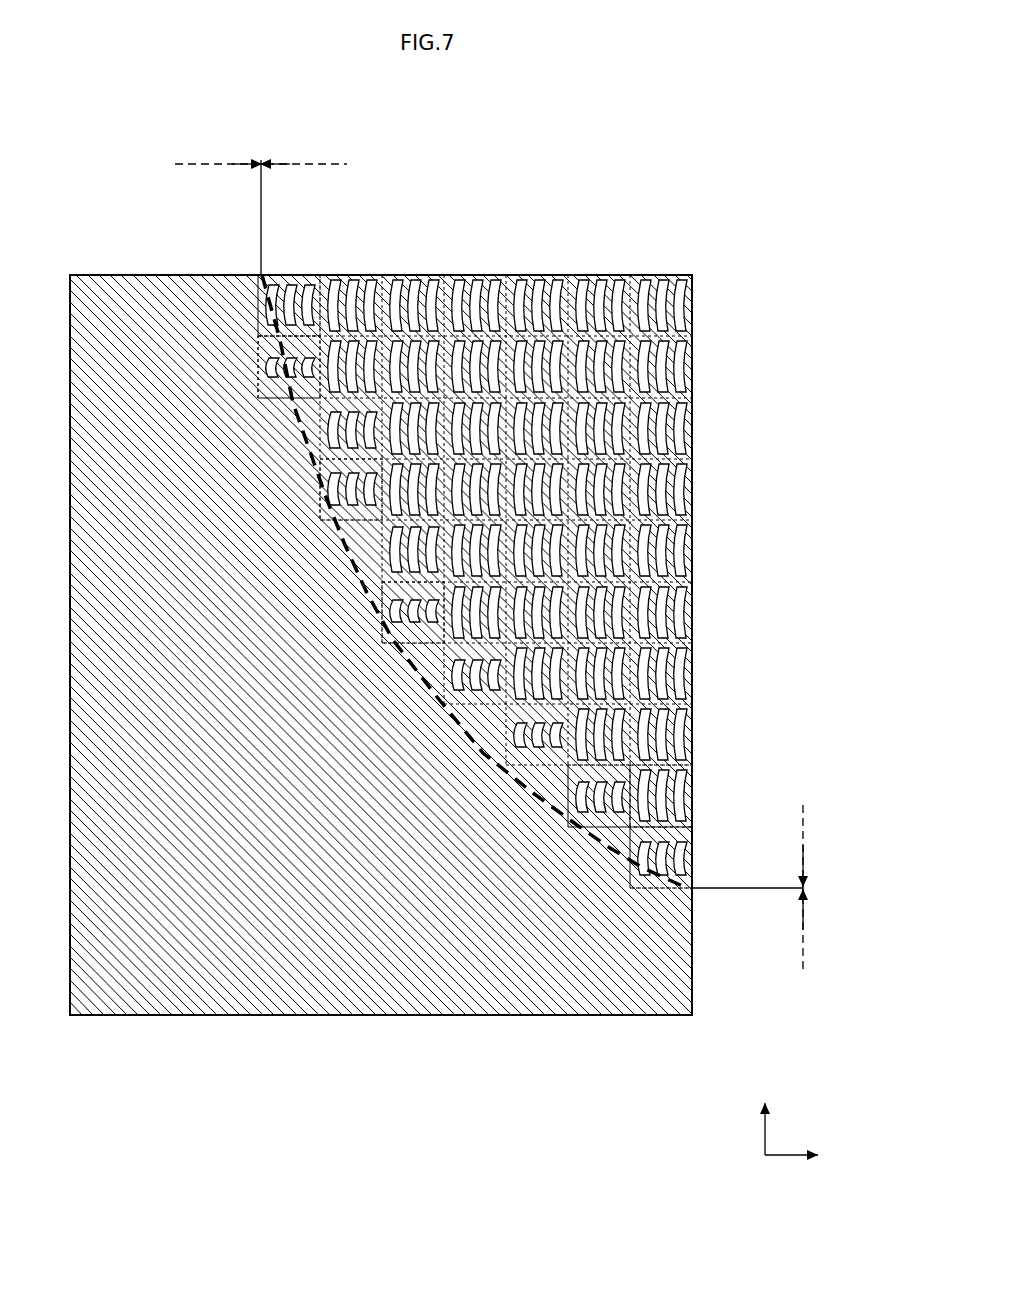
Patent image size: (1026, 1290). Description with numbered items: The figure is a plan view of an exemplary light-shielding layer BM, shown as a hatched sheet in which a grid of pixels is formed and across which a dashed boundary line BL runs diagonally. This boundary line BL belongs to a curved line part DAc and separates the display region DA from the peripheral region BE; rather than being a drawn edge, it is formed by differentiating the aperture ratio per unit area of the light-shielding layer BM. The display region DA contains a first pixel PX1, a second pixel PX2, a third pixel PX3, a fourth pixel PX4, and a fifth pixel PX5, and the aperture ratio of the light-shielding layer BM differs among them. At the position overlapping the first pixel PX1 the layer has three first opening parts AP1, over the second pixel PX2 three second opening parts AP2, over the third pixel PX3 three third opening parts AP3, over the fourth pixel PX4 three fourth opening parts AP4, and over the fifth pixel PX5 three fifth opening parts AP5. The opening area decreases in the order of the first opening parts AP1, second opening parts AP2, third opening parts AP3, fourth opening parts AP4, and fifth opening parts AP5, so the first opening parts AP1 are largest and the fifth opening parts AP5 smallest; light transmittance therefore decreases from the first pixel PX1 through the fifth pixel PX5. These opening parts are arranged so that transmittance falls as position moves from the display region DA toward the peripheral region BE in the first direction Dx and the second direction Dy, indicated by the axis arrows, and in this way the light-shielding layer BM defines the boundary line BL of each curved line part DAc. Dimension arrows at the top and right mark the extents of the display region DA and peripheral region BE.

The light-shielding layer BM is at (86, 755).
The boundary line BL is at (290, 419).
The first pixel PX1 is at (525, 546).
The second pixel PX2 is at (710, 784).
The third pixel PX3 is at (400, 517).
The fourth pixel PX4 is at (491, 673).
The fifth pixel PX5 is at (293, 497).
The first opening part AP1 is at (432, 288).
The second opening part AP2 is at (686, 797).
The third opening part AP3 is at (264, 295).
The fourth opening part AP4 is at (330, 472).
The fifth opening part AP5 is at (268, 357).
The peripheral region BE is at (216, 162).
The display region DA is at (302, 162).
The curved line part DAc is at (805, 845).
The first direction Dx is at (811, 1158).
The second direction Dy is at (766, 1114).